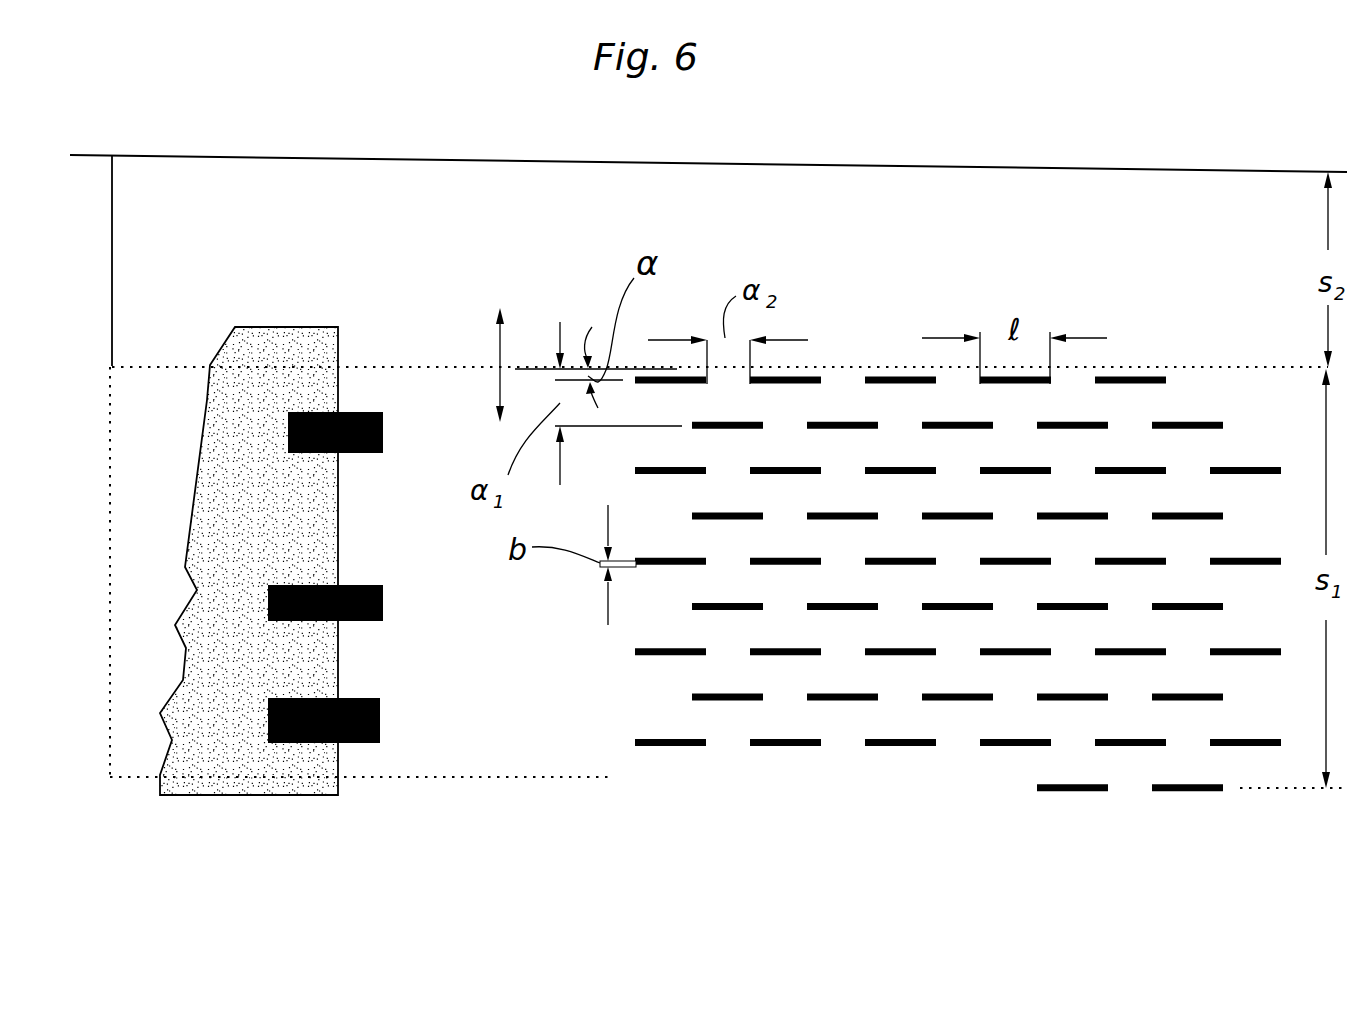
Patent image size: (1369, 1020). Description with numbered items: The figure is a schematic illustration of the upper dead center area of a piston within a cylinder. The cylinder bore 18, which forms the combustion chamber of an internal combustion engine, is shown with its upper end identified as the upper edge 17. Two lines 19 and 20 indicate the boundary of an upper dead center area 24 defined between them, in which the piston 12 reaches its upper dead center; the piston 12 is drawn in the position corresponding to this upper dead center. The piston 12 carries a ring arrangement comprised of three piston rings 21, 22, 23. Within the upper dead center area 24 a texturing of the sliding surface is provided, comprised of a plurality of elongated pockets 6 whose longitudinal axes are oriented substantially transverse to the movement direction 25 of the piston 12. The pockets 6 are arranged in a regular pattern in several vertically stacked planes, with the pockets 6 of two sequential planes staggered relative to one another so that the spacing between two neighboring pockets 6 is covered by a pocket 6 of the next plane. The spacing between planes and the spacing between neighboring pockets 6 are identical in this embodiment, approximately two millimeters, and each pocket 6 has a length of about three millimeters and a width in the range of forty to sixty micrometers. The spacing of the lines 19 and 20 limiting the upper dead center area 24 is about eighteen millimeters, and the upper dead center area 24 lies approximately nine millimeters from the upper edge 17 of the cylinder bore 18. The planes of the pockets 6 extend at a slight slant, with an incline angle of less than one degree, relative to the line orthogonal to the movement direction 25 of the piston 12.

The pockets 6 is at (680, 752).
The piston 12 is at (226, 786).
The upper end of cylinder bore 17 is at (968, 168).
The cylinder bore 18 is at (397, 230).
The line 19 is at (168, 358).
The line 20 is at (495, 780).
The piston ring 21 is at (380, 719).
The piston ring 22 is at (383, 601).
The piston ring 23 is at (383, 432).
The upper dead center area 24 is at (120, 563).
The movement direction 25 is at (500, 352).